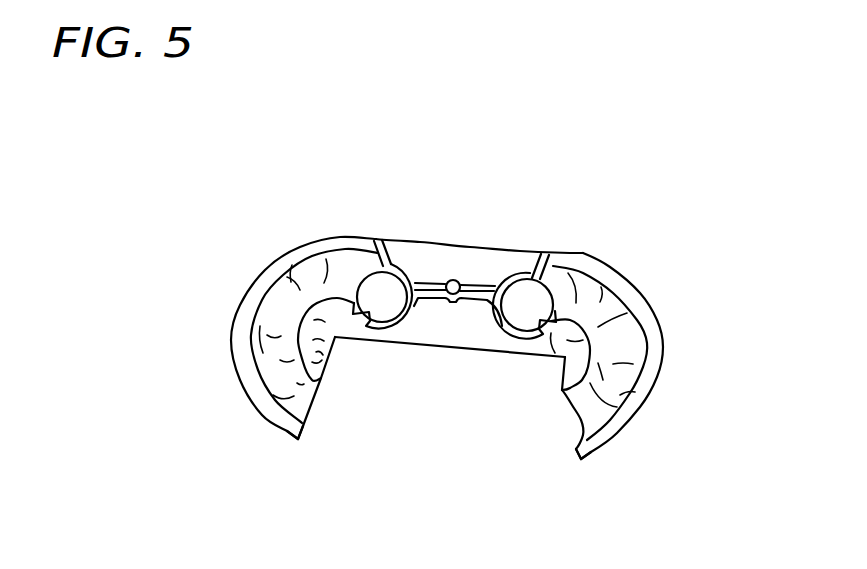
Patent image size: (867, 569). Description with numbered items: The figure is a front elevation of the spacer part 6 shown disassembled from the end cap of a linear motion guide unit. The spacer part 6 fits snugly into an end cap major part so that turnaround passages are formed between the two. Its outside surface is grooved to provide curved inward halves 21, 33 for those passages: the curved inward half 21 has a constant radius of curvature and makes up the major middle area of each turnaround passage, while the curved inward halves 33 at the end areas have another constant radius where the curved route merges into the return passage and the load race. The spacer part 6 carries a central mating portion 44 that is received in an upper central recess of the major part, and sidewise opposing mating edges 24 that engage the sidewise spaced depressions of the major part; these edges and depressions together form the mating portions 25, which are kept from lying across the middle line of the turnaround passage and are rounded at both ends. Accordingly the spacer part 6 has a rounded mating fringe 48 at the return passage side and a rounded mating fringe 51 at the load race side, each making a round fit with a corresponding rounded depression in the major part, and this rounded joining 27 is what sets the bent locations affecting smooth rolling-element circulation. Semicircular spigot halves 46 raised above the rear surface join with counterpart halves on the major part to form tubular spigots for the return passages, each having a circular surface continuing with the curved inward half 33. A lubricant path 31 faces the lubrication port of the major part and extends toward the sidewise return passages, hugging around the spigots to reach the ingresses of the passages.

The spacer part 6 is at (668, 373).
The curved inward half 21 is at (287, 312).
The mating edge 24 is at (612, 272).
The mating portion 25 is at (447, 348).
The connecting portion 27 is at (470, 343).
The lubricant path 31 is at (503, 323).
The curved inward half 33 is at (347, 263).
The central mating portion 44 is at (457, 250).
The semicircular spigot half 46 is at (398, 272).
The rounded mating fringe 48 is at (376, 247).
The rounded mating fringe 51 is at (289, 432).